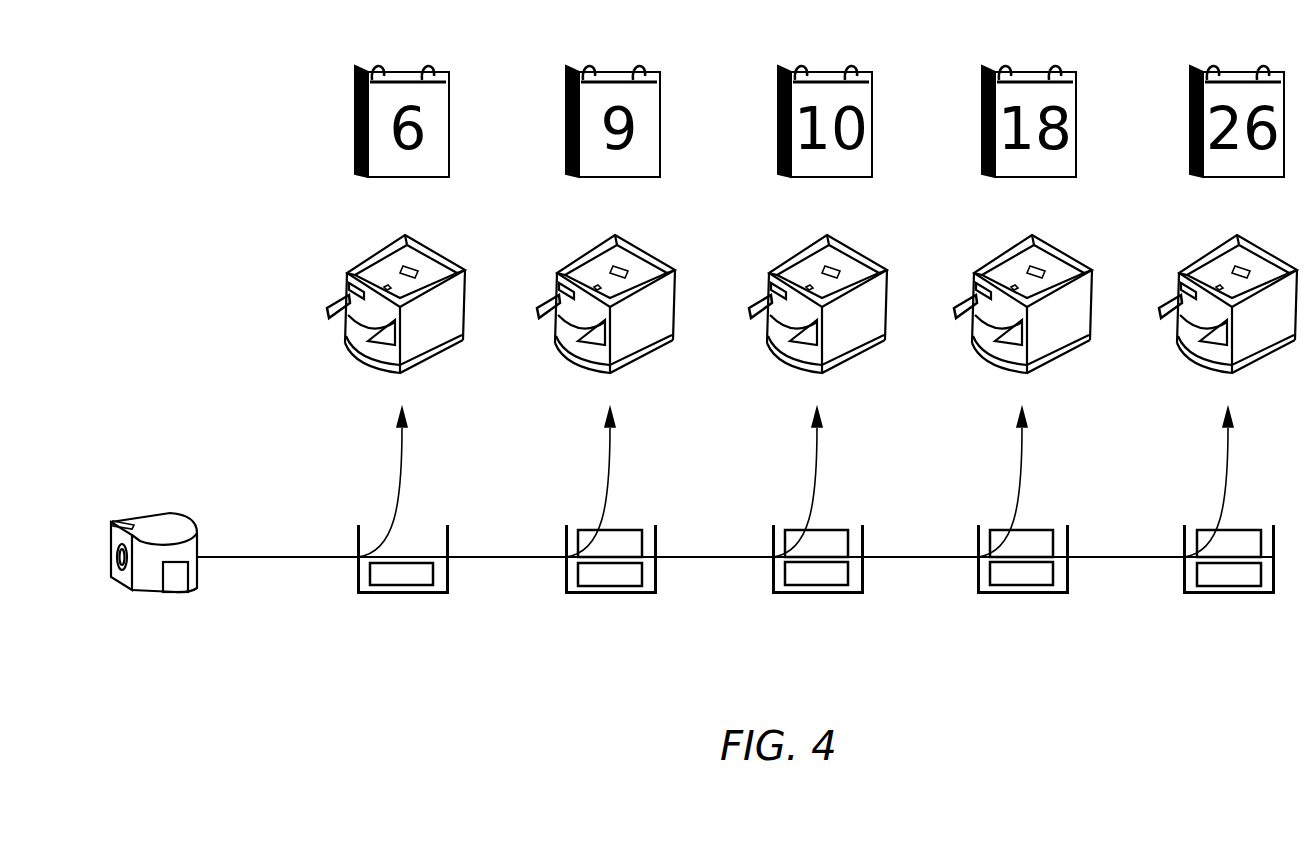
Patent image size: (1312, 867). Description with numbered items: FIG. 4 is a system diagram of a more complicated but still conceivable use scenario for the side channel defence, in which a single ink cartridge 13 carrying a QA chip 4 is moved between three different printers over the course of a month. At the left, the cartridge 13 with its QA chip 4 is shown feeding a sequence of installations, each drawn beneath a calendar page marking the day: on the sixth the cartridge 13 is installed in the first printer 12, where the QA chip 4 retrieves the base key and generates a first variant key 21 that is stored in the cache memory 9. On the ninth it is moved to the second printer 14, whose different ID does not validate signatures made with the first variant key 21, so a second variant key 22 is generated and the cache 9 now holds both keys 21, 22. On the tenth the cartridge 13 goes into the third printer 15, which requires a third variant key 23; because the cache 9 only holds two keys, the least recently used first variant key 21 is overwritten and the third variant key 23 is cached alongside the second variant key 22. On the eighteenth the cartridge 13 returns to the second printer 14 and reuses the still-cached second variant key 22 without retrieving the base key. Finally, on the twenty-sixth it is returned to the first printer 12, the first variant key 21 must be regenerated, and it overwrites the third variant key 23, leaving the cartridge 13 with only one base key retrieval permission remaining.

The QA chip 4 is at (127, 521).
The cartridge 13 is at (176, 530).
The cache memory 9 is at (356, 537).
The first variant key 21 is at (358, 577).
The second variant key 22 is at (617, 530).
The third variant key 23 is at (827, 530).
The first printer 12 is at (368, 257).
The second printer 14 is at (577, 257).
The third printer 15 is at (781, 258).